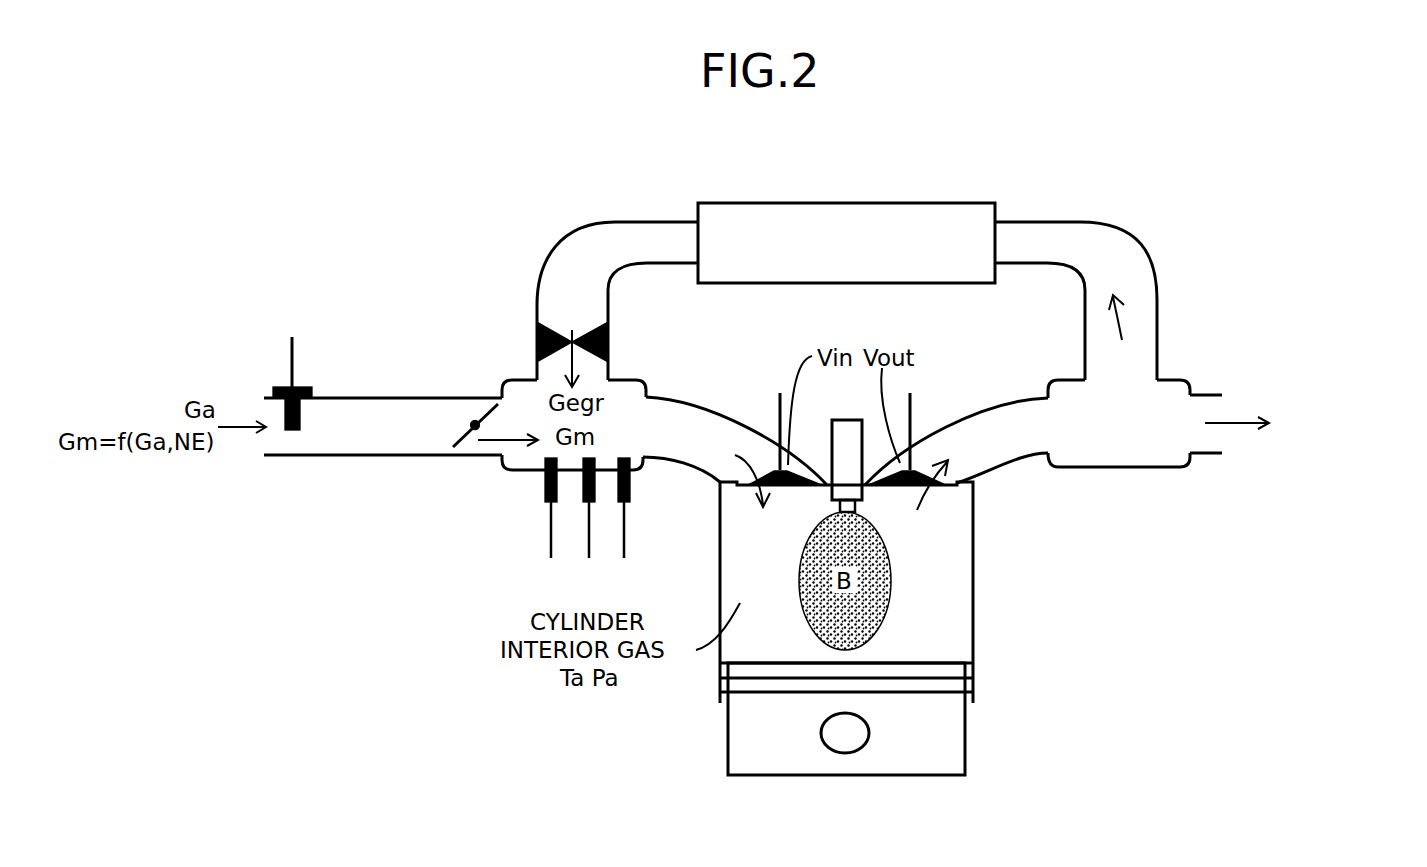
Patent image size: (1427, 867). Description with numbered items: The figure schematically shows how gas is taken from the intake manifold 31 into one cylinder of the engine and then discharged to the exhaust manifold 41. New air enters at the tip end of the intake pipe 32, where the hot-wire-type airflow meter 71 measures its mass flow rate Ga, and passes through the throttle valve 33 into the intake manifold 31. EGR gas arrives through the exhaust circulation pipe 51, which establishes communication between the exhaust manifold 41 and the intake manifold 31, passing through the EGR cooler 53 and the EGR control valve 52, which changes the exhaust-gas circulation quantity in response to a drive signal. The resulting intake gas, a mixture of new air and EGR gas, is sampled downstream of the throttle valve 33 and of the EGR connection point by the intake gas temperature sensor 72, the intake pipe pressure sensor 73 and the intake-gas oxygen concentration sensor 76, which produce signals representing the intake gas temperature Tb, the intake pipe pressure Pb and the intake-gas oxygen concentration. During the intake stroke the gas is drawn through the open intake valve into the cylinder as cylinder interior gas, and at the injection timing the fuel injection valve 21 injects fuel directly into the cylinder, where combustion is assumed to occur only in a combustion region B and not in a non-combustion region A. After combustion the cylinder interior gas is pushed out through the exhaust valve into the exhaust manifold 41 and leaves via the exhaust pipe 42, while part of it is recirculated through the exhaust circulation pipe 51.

The fuel injection valve 21 is at (847, 420).
The intake manifold 31 is at (674, 398).
The intake pipe 32 is at (330, 456).
The throttle valve 33 is at (462, 440).
The exhaust manifold 41 is at (950, 406).
The exhaust pipe 42 is at (1215, 393).
The exhaust circulation pipe 51 is at (660, 222).
The EGR control valve 52 is at (610, 342).
The EGR cooler 53 is at (857, 203).
The hot-wire-type airflow meter 71 is at (305, 384).
The intake gas temperature sensor 72 is at (545, 483).
The intake pipe pressure sensor 73 is at (582, 485).
The intake-gas oxygen concentration sensor 76 is at (632, 484).